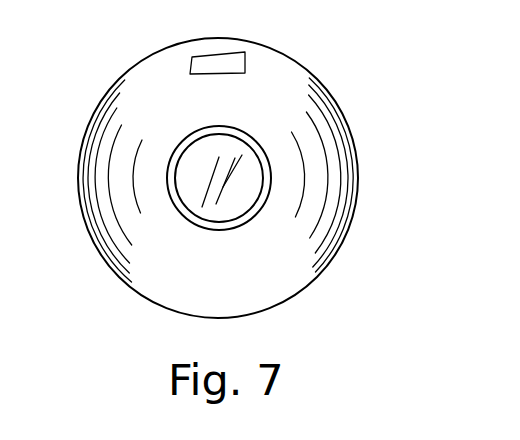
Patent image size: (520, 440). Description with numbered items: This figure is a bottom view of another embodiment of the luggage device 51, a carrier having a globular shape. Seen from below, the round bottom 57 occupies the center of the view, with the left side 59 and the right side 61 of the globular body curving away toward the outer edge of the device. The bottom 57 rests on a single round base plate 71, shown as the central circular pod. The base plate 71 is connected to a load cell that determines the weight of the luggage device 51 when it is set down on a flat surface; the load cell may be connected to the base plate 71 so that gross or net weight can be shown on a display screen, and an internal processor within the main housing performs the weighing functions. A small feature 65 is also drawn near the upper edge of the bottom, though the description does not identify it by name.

The luggage device 51 is at (374, 96).
The bottom 57 is at (181, 208).
The left side 59 is at (80, 155).
The right side 61 is at (358, 207).
The slot 65 is at (247, 73).
The base plate 71 is at (232, 202).